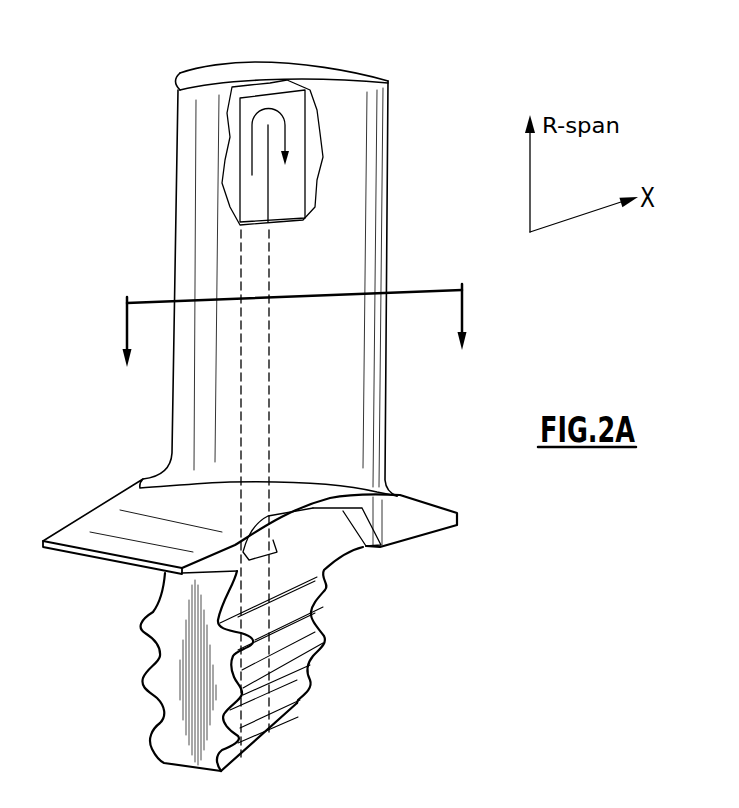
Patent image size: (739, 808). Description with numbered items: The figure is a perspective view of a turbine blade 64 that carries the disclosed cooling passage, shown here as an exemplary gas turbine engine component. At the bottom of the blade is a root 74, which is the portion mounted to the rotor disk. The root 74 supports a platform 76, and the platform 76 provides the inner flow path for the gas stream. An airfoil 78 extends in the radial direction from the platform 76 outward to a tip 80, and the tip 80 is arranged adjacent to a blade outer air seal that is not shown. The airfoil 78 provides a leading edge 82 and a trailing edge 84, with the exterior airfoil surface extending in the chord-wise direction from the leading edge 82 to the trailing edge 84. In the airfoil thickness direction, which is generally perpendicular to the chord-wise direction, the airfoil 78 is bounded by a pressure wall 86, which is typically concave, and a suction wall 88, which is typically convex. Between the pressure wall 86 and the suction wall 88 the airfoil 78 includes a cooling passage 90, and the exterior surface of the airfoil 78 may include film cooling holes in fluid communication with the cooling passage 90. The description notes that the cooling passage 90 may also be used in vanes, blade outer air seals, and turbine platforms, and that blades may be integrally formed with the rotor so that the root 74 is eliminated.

The turbine blade 64 is at (130, 227).
The root 74 is at (182, 672).
The platform 76 is at (285, 493).
The airfoil 78 is at (346, 376).
The tip 80 is at (194, 71).
The leading edge 82 is at (176, 237).
The trailing edge 84 is at (388, 227).
The pressure wall 86 is at (307, 286).
The suction wall 88 is at (320, 42).
The cooling passage 90 is at (335, 162).